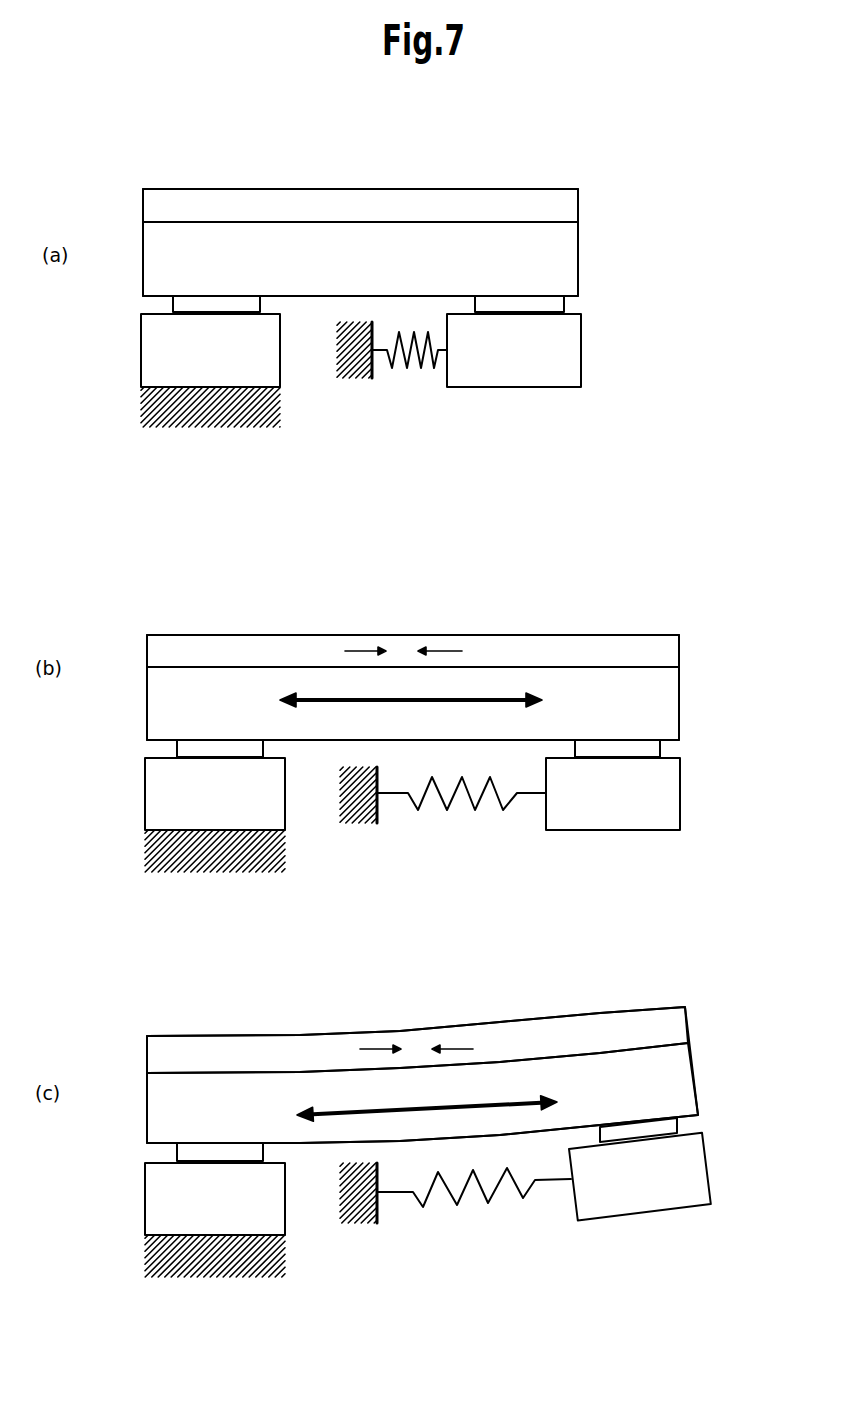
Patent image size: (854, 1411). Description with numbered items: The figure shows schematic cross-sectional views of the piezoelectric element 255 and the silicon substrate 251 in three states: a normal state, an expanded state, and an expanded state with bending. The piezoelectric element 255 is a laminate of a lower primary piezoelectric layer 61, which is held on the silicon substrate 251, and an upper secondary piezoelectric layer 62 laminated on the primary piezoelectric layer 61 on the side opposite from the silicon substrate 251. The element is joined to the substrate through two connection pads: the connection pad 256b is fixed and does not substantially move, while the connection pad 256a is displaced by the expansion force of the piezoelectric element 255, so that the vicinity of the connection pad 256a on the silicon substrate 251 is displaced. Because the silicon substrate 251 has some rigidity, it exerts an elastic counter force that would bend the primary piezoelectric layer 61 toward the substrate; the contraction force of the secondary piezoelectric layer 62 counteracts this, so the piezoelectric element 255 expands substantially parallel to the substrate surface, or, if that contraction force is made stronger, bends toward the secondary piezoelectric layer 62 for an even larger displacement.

The piezoelectric element 255 is at (424, 174).
The secondary piezoelectric layer 62 is at (578, 207).
The primary piezoelectric layer 61 is at (578, 255).
The connection pad 256a is at (565, 302).
The connection pad 256b is at (173, 300).
The silicon substrate 251 is at (280, 362).